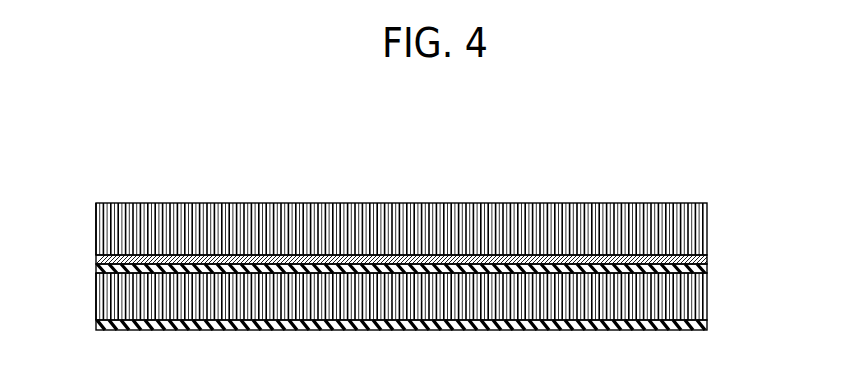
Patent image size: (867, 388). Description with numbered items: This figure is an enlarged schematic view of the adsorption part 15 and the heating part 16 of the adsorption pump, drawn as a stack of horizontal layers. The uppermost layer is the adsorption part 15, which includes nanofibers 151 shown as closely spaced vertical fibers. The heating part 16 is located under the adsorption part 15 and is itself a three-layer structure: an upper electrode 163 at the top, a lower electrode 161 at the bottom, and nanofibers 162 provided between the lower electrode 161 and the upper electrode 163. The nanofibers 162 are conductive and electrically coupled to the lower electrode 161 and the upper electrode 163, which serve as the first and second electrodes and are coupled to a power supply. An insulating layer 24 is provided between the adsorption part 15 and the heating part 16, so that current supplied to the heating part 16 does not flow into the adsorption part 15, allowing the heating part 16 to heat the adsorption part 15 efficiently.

The adsorption part 15 is at (426, 184).
The nanofibers 151 is at (582, 202).
The insulating layer 24 is at (96, 259).
The heating part 16 is at (469, 278).
The upper electrode 163 is at (707, 266).
The nanofibers 162 is at (707, 297).
The lower electrode 161 is at (444, 315).